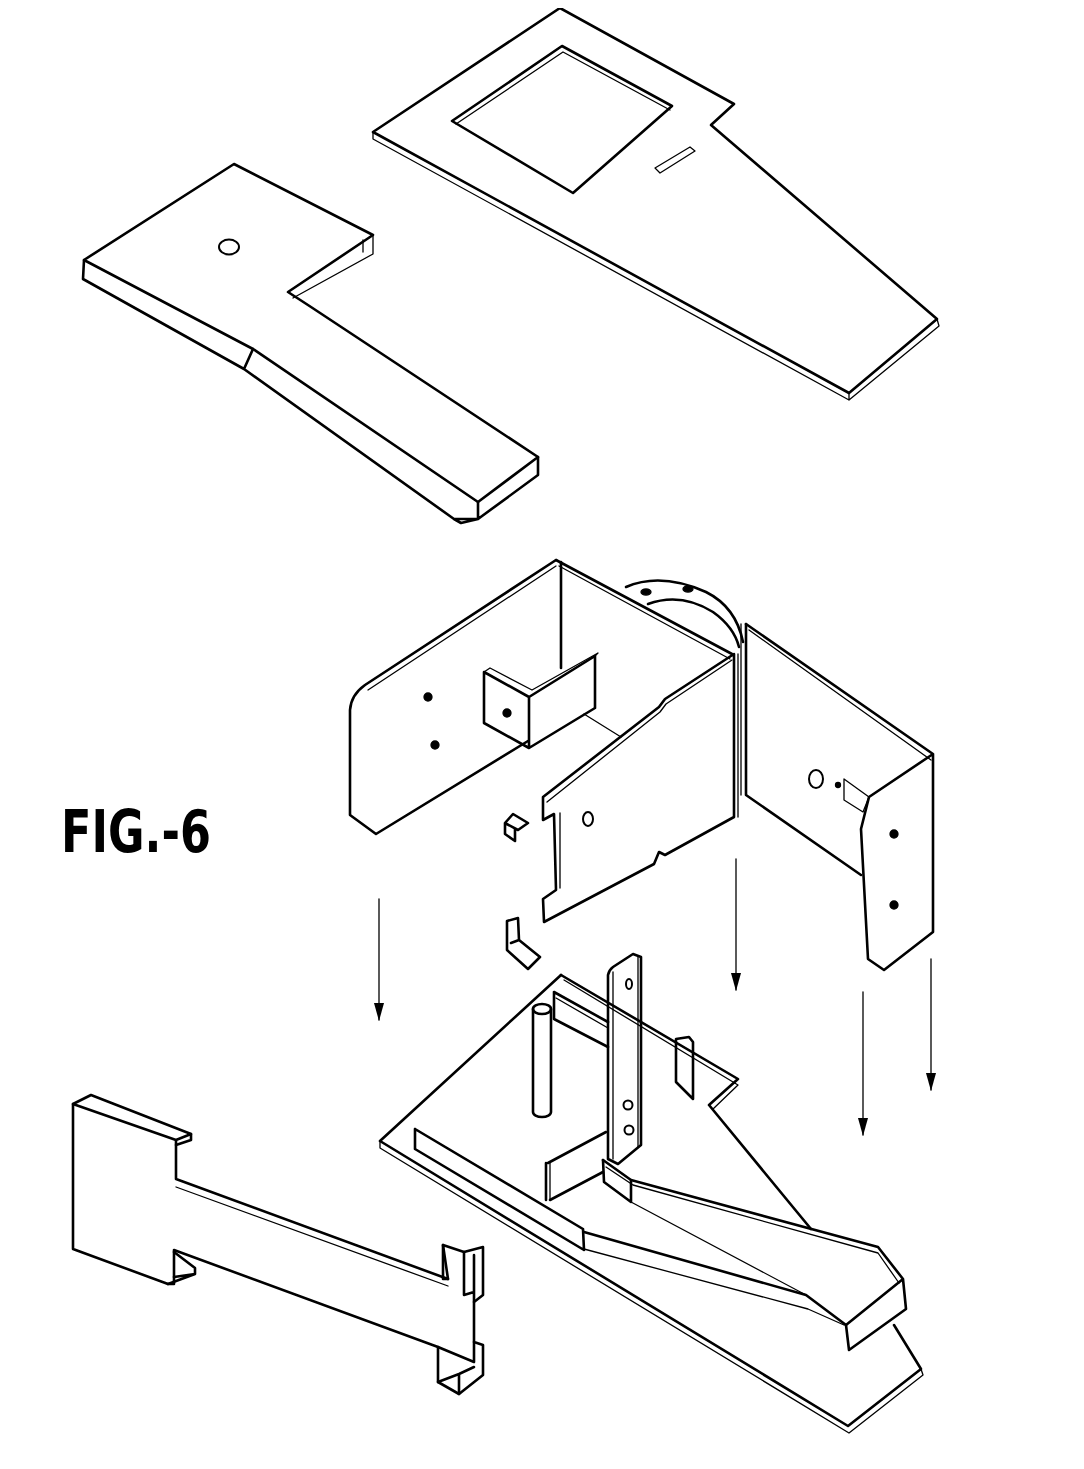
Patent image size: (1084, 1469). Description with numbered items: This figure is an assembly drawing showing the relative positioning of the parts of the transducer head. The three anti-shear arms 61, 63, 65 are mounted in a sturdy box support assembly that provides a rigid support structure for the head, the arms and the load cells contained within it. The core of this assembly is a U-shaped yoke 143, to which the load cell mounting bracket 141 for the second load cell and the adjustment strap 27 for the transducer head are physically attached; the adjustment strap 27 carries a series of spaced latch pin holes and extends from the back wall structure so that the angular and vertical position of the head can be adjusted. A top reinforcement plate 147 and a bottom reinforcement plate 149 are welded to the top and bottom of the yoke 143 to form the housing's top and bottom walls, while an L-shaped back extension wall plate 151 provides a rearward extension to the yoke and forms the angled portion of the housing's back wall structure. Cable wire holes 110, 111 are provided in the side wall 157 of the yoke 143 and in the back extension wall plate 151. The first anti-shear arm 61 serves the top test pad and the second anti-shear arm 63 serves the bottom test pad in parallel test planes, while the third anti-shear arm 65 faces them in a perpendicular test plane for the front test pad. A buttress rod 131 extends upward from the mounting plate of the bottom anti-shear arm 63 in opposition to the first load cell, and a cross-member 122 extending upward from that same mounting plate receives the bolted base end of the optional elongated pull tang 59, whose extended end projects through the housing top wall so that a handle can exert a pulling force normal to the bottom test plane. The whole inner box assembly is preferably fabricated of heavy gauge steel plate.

The top reinforcement plate 147 is at (757, 186).
The first anti-shear arm 61 is at (366, 326).
The adjustment strap 27 is at (656, 577).
The U-shaped yoke 143 is at (381, 702).
The side wall 157 is at (575, 876).
The cable wire hole 110 is at (585, 805).
The L-shaped back extension wall plate 151 is at (813, 684).
The cable wire hole 111 is at (801, 772).
The load cell mounting bracket 141 is at (535, 706).
The bottom reinforcement plate 149 is at (696, 1307).
The buttress rod 131 is at (534, 1044).
The pull tang 59 is at (613, 996).
The cross-member 122 is at (670, 1059).
The second anti-shear arm 63 is at (683, 1226).
The third anti-shear arm 65 is at (271, 1254).